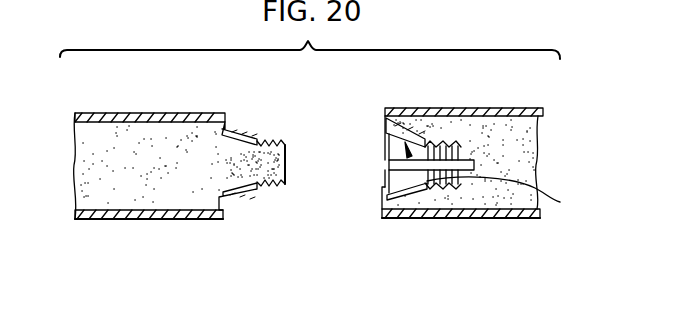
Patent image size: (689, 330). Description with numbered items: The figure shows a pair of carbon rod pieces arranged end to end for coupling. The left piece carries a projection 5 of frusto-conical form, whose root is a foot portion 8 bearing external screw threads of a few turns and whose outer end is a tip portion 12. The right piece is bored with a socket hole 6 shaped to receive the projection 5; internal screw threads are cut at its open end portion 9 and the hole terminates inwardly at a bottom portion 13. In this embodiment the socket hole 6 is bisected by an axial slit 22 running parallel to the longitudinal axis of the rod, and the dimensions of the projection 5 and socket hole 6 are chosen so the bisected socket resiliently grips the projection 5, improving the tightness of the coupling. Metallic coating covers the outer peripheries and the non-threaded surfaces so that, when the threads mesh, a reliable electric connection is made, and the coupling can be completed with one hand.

The projection 5 is at (276, 190).
The socket hole 6 is at (421, 140).
The foot portion 8 is at (231, 204).
The open end portion 9 is at (382, 188).
The tip portion 12 is at (260, 163).
The bottom portion 13 is at (508, 196).
The slit 22 is at (468, 165).